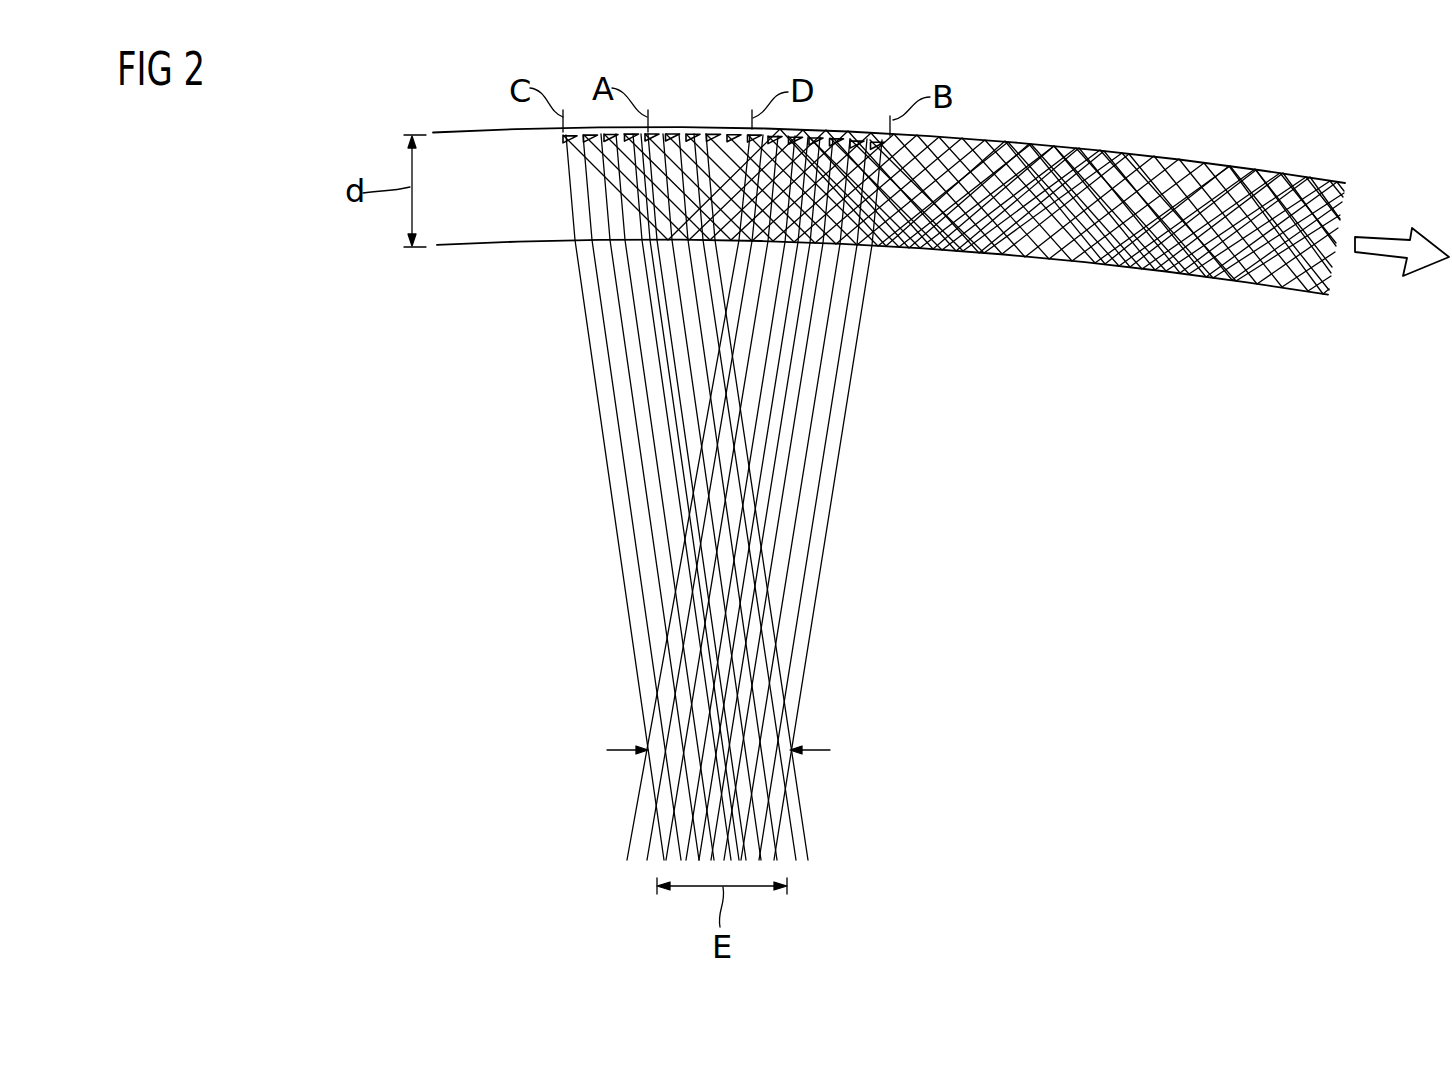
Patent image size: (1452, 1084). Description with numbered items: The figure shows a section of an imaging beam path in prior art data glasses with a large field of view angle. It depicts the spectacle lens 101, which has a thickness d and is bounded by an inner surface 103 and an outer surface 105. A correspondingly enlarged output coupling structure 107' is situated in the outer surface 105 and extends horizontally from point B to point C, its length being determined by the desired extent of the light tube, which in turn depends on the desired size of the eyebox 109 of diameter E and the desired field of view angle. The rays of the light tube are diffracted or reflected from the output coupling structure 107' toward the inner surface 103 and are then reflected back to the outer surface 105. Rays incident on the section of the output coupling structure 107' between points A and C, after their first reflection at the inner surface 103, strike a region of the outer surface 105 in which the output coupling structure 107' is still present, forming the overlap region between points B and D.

The spectacle lens 101 is at (872, 185).
The inner surface 103 is at (507, 248).
The outer surface 105 is at (493, 130).
The output coupling structure 107' is at (724, 97).
The eyebox 109 is at (618, 747).